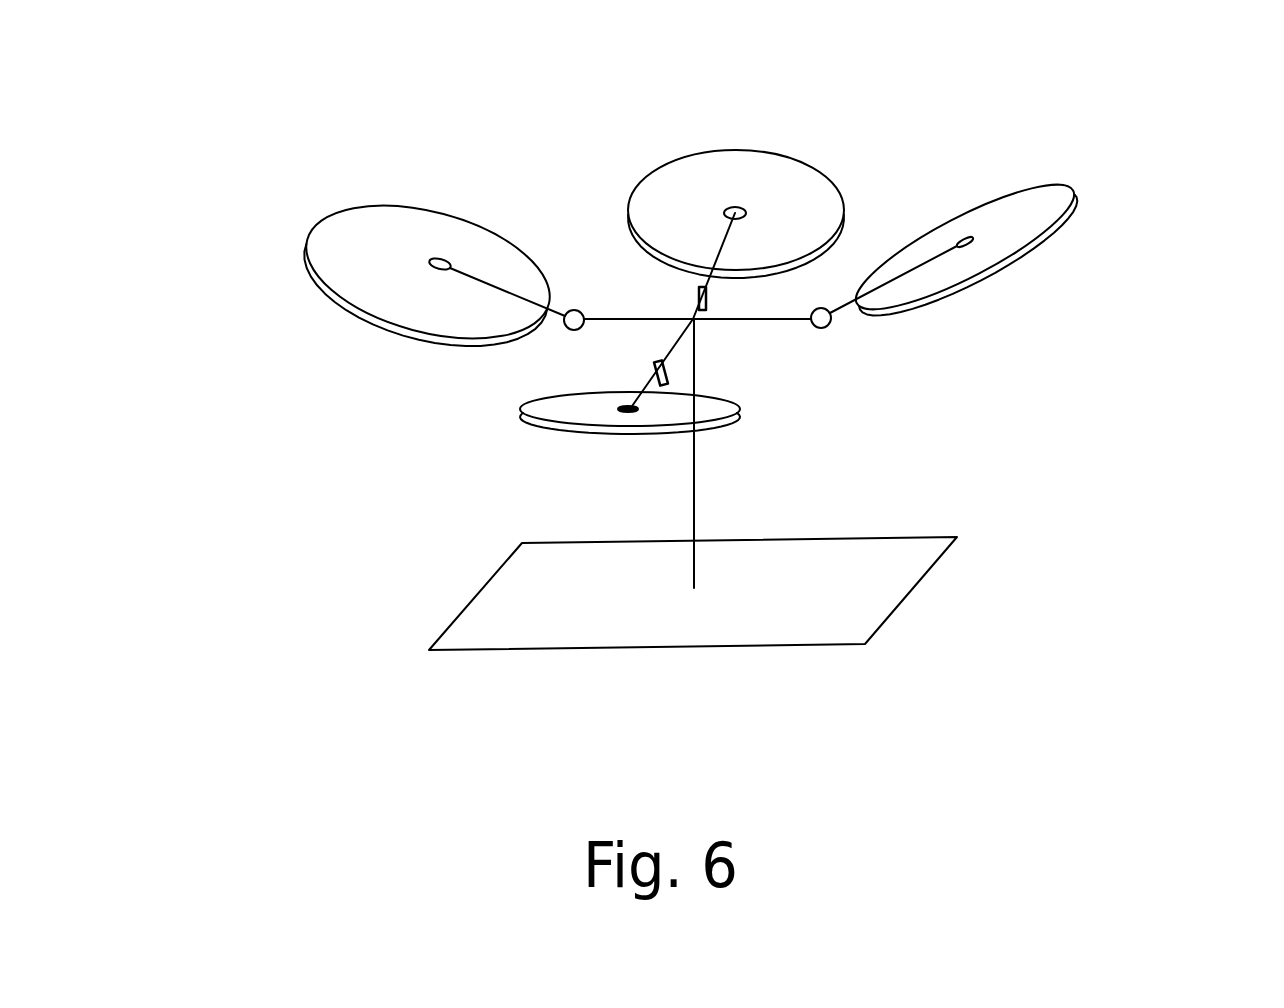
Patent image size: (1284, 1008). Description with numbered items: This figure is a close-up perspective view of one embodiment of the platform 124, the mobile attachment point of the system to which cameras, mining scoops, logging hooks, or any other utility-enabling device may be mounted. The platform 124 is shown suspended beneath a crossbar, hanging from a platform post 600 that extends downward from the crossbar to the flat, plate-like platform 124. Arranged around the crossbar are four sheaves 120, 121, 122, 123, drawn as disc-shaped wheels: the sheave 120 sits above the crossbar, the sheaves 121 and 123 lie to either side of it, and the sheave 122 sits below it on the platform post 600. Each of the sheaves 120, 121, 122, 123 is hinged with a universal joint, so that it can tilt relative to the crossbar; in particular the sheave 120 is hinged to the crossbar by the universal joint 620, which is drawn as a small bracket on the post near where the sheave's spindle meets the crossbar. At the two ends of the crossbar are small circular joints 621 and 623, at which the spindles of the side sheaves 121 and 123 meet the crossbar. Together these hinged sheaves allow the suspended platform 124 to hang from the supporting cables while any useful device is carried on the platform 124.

The sheave 120 is at (735, 132).
The sheave 121 is at (1087, 185).
The sheave 122 is at (512, 412).
The sheave 123 is at (298, 215).
The platform 124 is at (928, 587).
The platform post 600 is at (705, 473).
The universal joint 620 is at (687, 292).
The right pivot joint 621 is at (832, 330).
The left pivot joint 623 is at (558, 338).